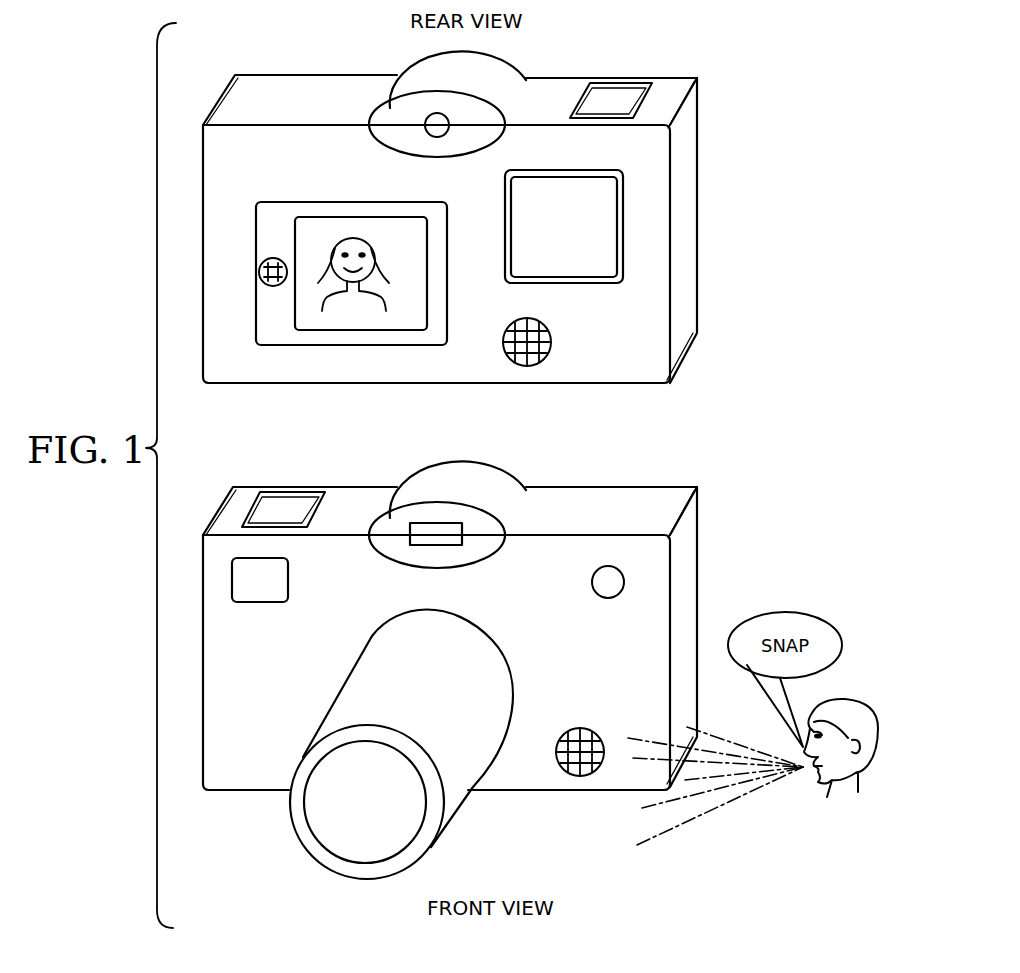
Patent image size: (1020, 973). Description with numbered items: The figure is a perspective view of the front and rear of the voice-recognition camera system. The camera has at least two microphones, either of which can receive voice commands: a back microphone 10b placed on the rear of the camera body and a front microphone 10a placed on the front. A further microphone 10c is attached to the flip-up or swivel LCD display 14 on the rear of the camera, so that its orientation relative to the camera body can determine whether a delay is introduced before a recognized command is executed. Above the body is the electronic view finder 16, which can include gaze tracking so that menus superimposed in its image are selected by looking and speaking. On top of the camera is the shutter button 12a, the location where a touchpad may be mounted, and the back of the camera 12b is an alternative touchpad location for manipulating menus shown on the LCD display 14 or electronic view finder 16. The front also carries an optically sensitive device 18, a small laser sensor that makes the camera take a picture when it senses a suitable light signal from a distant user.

The front microphone 10a is at (584, 728).
The back microphone 10b is at (552, 345).
The display microphone 10c is at (259, 268).
The shutter button 12a is at (647, 80).
The back of the camera 12b is at (602, 285).
The LCD display 14 is at (352, 350).
The electronic view finder 16 is at (380, 146).
The optically sensitive device 18 is at (603, 598).